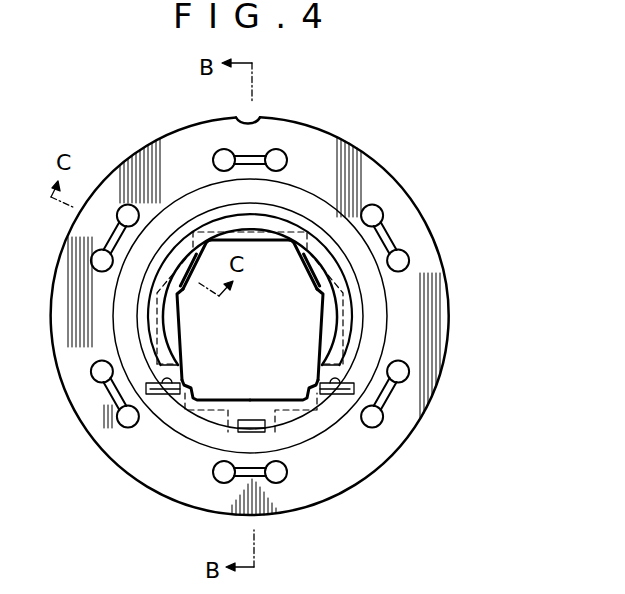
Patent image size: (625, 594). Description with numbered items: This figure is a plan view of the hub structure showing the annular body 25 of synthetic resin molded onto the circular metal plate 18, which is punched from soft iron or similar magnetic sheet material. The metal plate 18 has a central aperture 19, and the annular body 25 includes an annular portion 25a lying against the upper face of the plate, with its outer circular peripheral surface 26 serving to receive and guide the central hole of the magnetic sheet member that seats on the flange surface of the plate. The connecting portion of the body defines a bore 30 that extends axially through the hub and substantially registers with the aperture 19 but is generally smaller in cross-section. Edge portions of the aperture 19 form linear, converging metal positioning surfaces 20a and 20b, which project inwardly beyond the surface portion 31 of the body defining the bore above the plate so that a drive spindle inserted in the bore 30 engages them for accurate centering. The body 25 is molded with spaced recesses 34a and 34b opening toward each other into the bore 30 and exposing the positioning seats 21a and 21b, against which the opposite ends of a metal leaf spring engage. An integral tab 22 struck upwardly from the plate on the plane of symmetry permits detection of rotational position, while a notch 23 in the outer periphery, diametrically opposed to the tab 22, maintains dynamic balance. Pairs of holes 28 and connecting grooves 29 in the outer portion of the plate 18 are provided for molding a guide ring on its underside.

The metal plate 18 is at (433, 283).
The central aperture 19 is at (197, 227).
The positioning surface 20a is at (191, 282).
The positioning surface 20b is at (303, 268).
The positioning seat 21a is at (163, 396).
The positioning seat 21b is at (337, 396).
The tab 22 is at (265, 430).
The notch 23 is at (258, 112).
The annular body 25 is at (373, 292).
The annular portion 25a is at (333, 212).
The outer circular peripheral surface 26 is at (397, 331).
The holes 28 is at (399, 258).
The connecting grooves 29 is at (117, 406).
The bore 30 is at (255, 272).
The surface portion 31 is at (186, 292).
The recess 34a is at (196, 390).
The recess 34b is at (305, 388).